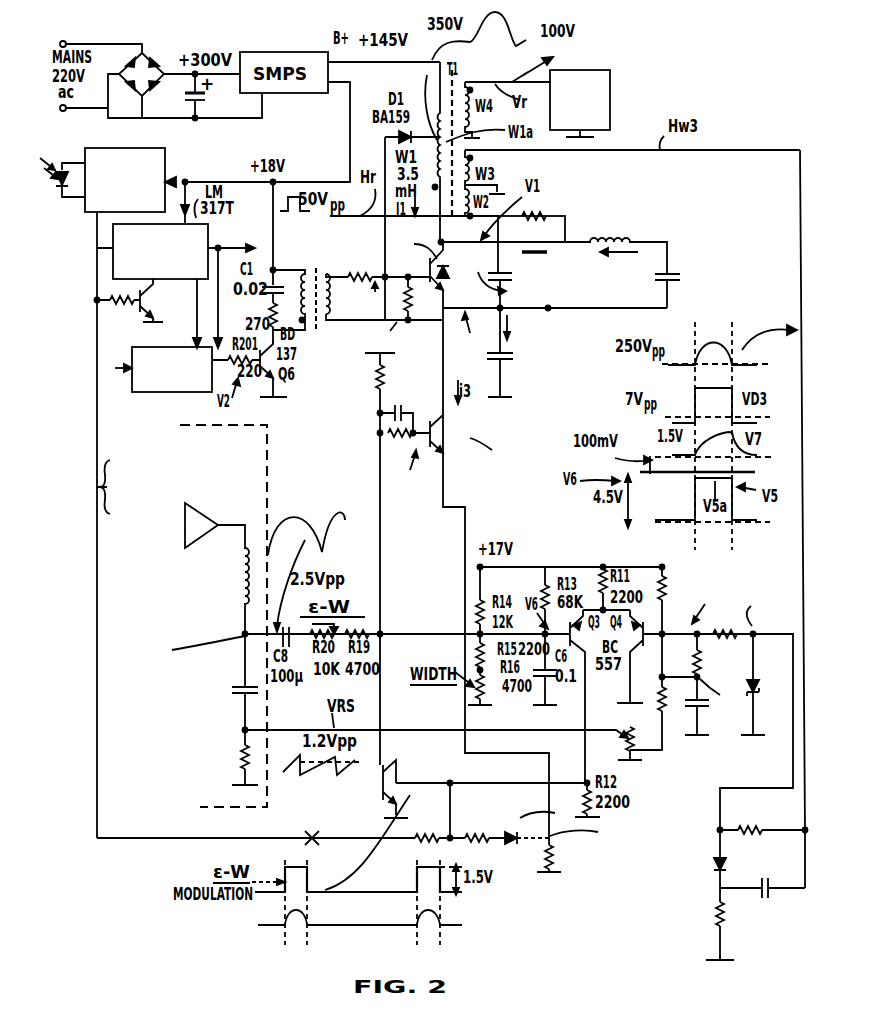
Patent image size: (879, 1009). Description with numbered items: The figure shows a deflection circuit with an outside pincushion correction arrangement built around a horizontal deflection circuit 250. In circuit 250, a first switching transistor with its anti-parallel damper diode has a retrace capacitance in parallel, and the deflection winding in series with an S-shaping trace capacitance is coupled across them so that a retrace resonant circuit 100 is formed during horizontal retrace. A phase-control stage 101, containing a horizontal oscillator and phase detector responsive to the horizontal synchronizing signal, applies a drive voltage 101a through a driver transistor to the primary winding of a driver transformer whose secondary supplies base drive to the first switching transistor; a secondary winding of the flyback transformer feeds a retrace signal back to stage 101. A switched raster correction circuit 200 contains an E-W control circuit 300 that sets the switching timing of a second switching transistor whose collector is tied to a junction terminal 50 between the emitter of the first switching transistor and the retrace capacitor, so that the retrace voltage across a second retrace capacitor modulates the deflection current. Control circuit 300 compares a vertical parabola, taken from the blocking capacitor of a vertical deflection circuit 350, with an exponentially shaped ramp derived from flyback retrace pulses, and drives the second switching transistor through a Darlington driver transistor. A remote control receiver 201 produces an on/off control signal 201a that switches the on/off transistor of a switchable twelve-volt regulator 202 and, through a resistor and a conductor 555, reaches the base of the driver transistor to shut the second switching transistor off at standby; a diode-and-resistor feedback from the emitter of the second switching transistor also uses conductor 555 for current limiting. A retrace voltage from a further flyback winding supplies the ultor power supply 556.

The remote control receiver 201 is at (164, 150).
The switchable 12V regulator 202 is at (97, 248).
The on/off control signal 201a is at (97, 300).
The phase-control stage 101 is at (135, 393).
The drive voltage 101a is at (306, 336).
The retrace resonant circuit 100 is at (598, 300).
The junction terminal 50 is at (549, 310).
The switched raster correction circuit 200 is at (513, 500).
The vertical deflection circuit 350 is at (233, 516).
The E-W control circuit 300 is at (758, 777).
The horizontal deflection circuit 250 is at (575, 922).
The conductor 555 is at (450, 805).
The ultor power supply 556 is at (610, 79).